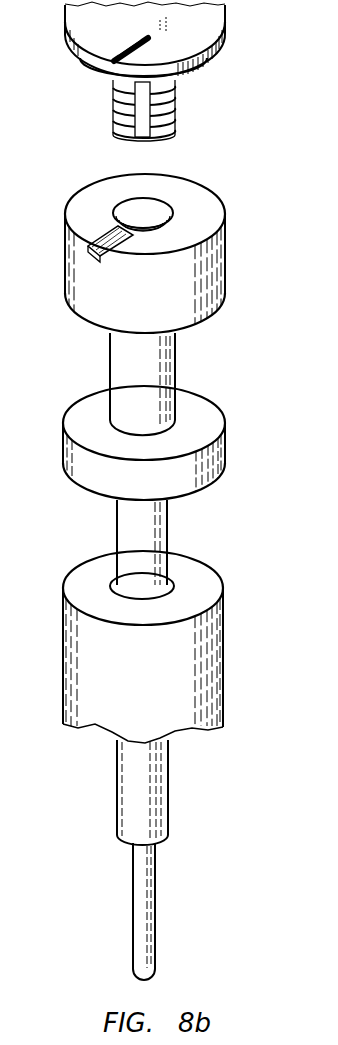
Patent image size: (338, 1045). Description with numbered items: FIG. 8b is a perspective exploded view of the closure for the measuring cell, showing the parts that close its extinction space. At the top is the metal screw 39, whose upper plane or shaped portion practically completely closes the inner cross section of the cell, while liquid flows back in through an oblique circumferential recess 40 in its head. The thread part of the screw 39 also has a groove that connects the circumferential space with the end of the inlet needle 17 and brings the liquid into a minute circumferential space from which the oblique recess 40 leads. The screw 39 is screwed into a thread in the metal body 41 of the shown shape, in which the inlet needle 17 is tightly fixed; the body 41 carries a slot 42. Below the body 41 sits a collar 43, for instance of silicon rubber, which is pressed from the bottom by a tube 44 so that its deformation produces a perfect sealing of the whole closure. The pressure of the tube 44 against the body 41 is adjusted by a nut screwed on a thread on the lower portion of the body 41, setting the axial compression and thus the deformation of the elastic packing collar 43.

The oblique circumferential recess 40 is at (113, 62).
The metal screw 39 is at (176, 113).
The slot 42 is at (97, 238).
The metal body 41 is at (197, 285).
The collar 43 is at (203, 455).
The tube 44 is at (197, 583).
The inlet needle 17 is at (142, 890).